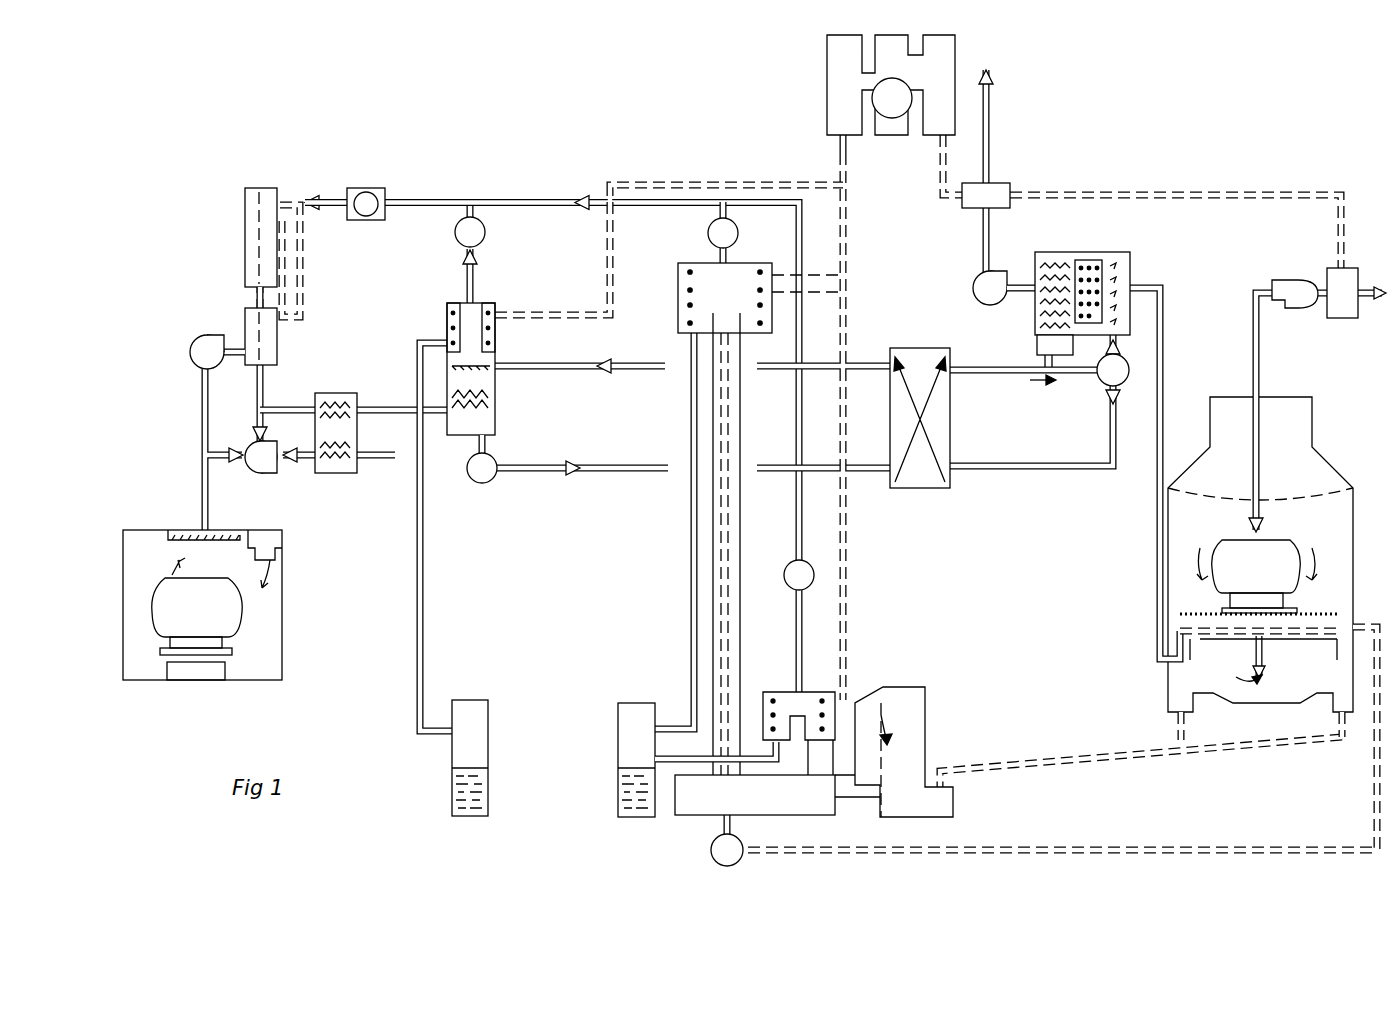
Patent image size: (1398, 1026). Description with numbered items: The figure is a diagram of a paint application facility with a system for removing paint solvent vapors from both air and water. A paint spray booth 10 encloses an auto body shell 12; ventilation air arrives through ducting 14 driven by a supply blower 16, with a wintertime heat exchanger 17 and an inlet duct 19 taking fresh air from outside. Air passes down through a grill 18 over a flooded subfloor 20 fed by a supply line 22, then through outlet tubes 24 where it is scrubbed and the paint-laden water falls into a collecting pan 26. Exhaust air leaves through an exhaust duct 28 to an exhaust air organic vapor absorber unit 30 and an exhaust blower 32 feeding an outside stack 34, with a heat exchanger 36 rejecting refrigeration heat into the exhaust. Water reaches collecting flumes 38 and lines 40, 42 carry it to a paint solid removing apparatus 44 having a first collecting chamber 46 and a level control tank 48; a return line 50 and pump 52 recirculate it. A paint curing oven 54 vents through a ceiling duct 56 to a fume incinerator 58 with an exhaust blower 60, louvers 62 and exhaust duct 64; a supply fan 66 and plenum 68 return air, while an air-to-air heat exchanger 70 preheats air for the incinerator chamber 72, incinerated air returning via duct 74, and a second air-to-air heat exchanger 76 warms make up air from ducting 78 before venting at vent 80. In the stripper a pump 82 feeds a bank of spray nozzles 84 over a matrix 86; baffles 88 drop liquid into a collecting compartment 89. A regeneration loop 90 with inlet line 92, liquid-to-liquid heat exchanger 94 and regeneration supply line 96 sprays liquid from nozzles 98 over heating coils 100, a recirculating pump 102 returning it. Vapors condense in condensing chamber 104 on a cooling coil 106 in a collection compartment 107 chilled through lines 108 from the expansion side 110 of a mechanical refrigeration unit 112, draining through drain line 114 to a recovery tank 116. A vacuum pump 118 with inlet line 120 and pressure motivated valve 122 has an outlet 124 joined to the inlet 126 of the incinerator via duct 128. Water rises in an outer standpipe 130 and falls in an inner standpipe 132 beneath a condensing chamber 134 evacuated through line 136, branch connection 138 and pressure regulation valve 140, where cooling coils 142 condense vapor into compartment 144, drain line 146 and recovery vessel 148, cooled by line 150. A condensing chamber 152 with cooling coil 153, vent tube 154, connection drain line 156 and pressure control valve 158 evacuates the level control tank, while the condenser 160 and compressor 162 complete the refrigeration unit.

The paint spray booth 10 is at (1328, 456).
The auto body shell 12 is at (206, 620).
The ducting 14 is at (1250, 348).
The supply blower 16 is at (1290, 310).
The wintertime heat exchanger 17 is at (1343, 318).
The grill 18 is at (1190, 606).
The inlet duct 19 is at (1375, 300).
The flooded subfloor 20 is at (1188, 655).
The supply line 22 is at (1360, 624).
The outlet tubes 24 is at (1270, 660).
The collecting pan 26 is at (1258, 694).
The exhaust duct 28 is at (1156, 625).
The exhaust air organic vapor absorber unit 30 is at (1102, 250).
The exhaust blower 32 is at (973, 293).
The outside stack 34 is at (993, 130).
The heat exchanger 36 is at (1008, 184).
The collecting flumes 38 is at (1168, 695).
The line 40 is at (1177, 725).
The line 42 is at (1345, 738).
The paint solid removing apparatus 44 is at (940, 688).
The first collecting chamber 46 is at (888, 688).
The level control tank 48 is at (838, 776).
The return line 50 is at (1010, 847).
The pump 52 is at (711, 848).
The paint curing oven 54 is at (292, 648).
The ceiling duct 56 is at (172, 535).
The fume incinerator 58 is at (218, 258).
The exhaust blower 60 is at (205, 336).
The louvers 62 is at (228, 540).
The exhaust duct 64 is at (205, 480).
The supply fan 66 is at (250, 470).
The plenum 68 is at (258, 530).
The air-to-air heat exchanger 70 is at (279, 355).
The incinerator chamber 72 is at (240, 238).
The duct 74 is at (258, 395).
The second air-to-air heat exchanger 76 is at (322, 476).
The ducting 78 is at (373, 470).
The vent 80 is at (380, 405).
The pump 82 is at (1100, 385).
The bank of spray nozzles 84 is at (1120, 256).
The matrix 86 is at (1090, 260).
The baffles 88 is at (1055, 262).
The collecting compartment 89 is at (1050, 366).
The regeneration loop 90 is at (1005, 366).
The inlet line 92 is at (965, 364).
The liquid-to-liquid heat exchanger 94 is at (952, 410).
The regeneration supply line 96 is at (575, 366).
The nozzles 98 is at (478, 372).
The heating coils 100 is at (470, 420).
The recirculating pump 102 is at (485, 468).
The condensing chamber 104 is at (487, 303).
The cooling coil 106 is at (455, 305).
The collection compartment 107 is at (450, 325).
The lines 108 is at (607, 247).
The expansion side 110 is at (827, 78).
The mechanical refrigeration unit 112 is at (800, 47).
The drain line 114 is at (424, 568).
The recovery tank 116 is at (490, 720).
The vacuum pump 118 is at (385, 192).
The inlet line 120 is at (486, 224).
The pressure motivated valve 122 is at (455, 232).
The outlet 124 is at (338, 200).
The inlet 126 is at (291, 200).
The duct 128 is at (303, 292).
The outer standpipe 130 is at (782, 577).
The inner standpipe 132 is at (742, 525).
The condensing chamber 134 is at (757, 263).
The line 136 is at (545, 200).
The branch connection 138 is at (708, 218).
The pressure regulation valve 140 is at (712, 240).
The cooling coils 142 is at (688, 272).
The compartment 144 is at (690, 305).
The drain line 146 is at (690, 538).
The recovery vessel 148 is at (617, 724).
The line 150 is at (850, 234).
The condensing chamber 152 is at (800, 690).
The cooling coil 153 is at (775, 692).
The vent tube 154 is at (822, 700).
The connection drain line 156 is at (763, 722).
The pressure control valve 158 is at (798, 592).
The condenser 160 is at (968, 68).
The compressor 162 is at (888, 118).